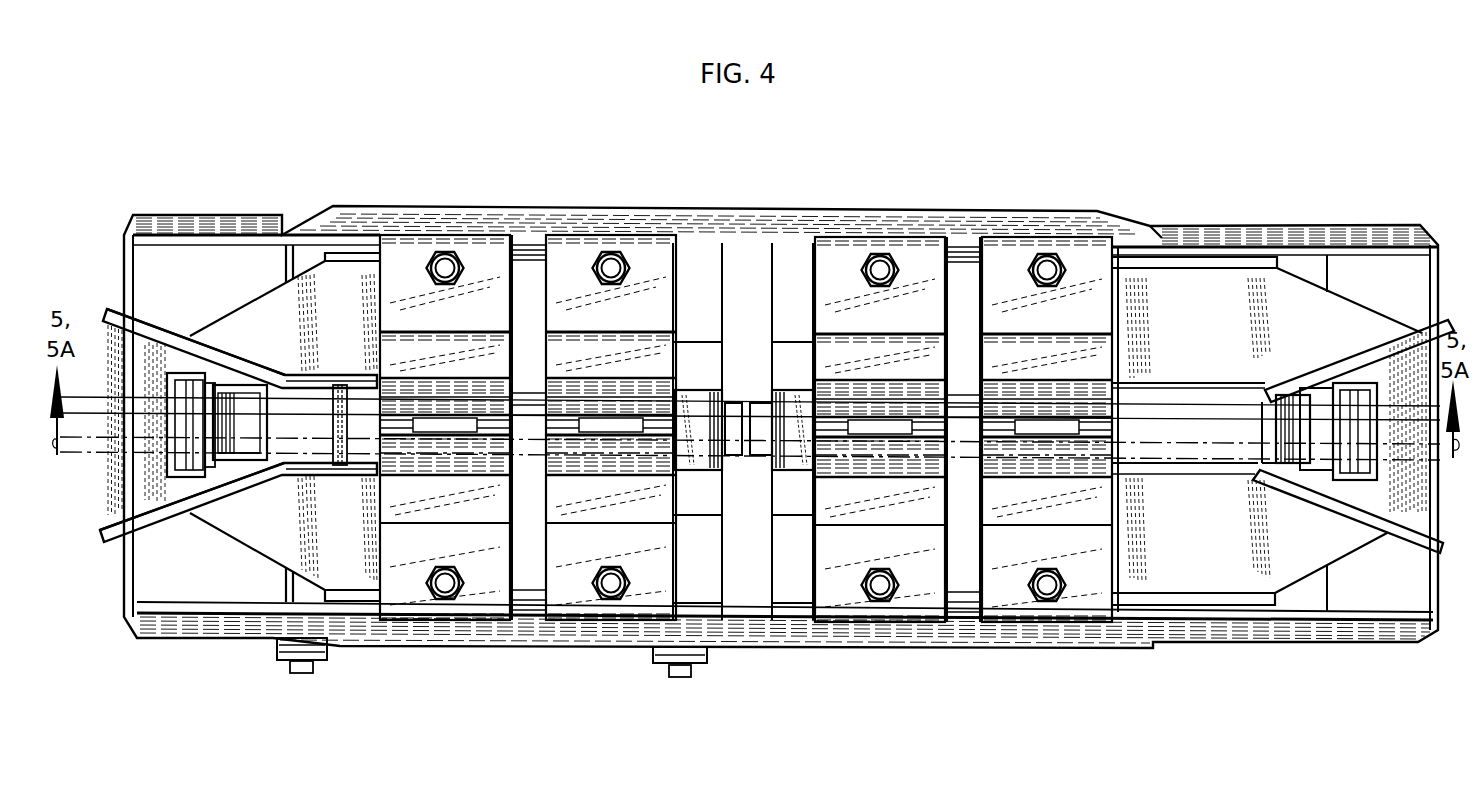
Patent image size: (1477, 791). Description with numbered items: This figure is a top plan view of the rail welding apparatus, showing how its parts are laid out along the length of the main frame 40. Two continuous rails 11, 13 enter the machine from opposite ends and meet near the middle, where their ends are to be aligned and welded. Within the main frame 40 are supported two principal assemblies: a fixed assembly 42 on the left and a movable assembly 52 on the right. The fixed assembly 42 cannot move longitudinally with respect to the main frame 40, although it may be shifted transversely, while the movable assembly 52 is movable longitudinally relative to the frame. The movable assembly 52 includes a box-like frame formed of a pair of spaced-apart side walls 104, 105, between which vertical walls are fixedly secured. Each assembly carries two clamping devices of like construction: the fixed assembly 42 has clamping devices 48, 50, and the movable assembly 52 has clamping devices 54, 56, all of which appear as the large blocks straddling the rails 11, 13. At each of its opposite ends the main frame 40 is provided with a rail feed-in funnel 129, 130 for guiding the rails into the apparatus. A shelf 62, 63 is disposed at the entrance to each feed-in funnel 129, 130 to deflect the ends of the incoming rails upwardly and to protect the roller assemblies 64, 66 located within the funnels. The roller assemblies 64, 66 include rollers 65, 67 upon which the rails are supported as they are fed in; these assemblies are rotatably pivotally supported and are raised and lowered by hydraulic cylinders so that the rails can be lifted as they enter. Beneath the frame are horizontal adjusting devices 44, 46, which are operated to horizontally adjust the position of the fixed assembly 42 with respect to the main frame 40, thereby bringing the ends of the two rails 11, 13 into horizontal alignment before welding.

The continuous rail 11 is at (760, 403).
The continuous rail 13 is at (733, 403).
The main frame 40 is at (930, 212).
The fixed assembly 42 is at (530, 283).
The horizontal adjusting device 44 is at (328, 655).
The horizontal adjusting device 46 is at (704, 658).
The clamping device 48 is at (461, 238).
The clamping device 50 is at (666, 240).
The movable assembly 52 is at (962, 280).
The clamping device 54 is at (839, 240).
The clamping device 56 is at (1076, 250).
The shelf 62 is at (120, 482).
The shelf 63 is at (1416, 470).
The roller assembly 64 is at (256, 400).
The roller 65 is at (249, 445).
The roller assembly 66 is at (1292, 424).
The roller 67 is at (1307, 467).
The side wall 104 is at (962, 286).
The side wall 105 is at (967, 600).
The rail feed-in funnel 129 is at (168, 528).
The rail feed-in funnel 130 is at (1437, 515).